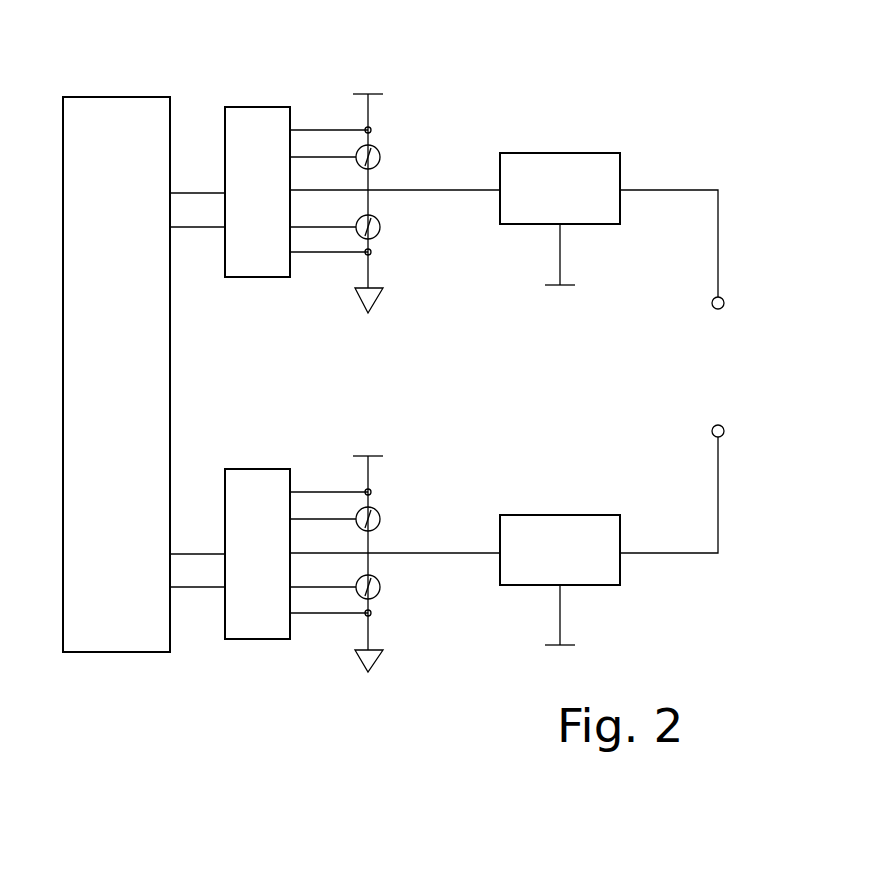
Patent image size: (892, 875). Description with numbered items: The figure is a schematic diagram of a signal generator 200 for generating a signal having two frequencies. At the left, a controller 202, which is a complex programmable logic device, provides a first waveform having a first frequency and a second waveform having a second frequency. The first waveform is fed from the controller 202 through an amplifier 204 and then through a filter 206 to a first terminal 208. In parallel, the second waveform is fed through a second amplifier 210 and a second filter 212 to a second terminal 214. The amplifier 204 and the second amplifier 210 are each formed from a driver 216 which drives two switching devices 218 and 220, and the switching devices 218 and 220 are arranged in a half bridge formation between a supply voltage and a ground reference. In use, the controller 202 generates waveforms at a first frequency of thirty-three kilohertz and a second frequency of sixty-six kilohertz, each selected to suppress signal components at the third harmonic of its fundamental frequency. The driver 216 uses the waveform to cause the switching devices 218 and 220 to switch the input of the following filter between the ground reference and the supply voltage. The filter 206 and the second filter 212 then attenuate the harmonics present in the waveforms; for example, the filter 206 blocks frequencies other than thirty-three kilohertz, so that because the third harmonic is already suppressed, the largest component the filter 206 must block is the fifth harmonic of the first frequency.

The signal generator 200 is at (645, 54).
The controller 202 is at (113, 103).
The amplifier 204 is at (413, 65).
The filter 206 is at (580, 157).
The first terminal 208 is at (722, 298).
The second amplifier 210 is at (413, 678).
The second filter 212 is at (580, 520).
The second terminal 214 is at (723, 426).
The driver 216 is at (265, 270).
The switching device 218 is at (382, 157).
The switching device 220 is at (382, 228).